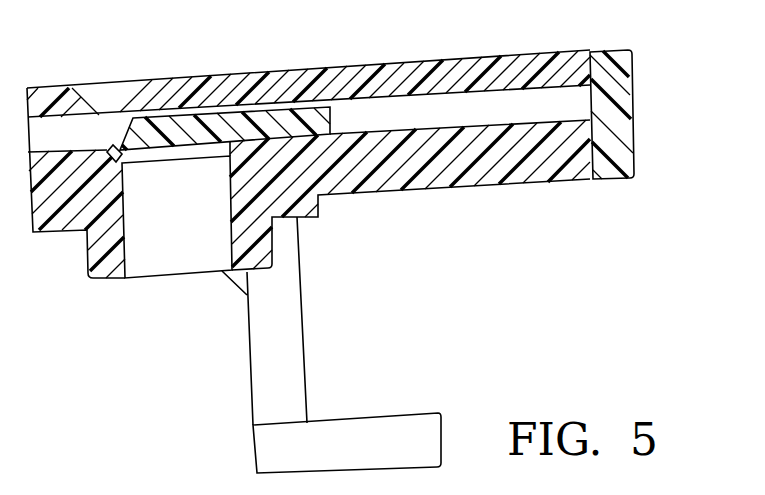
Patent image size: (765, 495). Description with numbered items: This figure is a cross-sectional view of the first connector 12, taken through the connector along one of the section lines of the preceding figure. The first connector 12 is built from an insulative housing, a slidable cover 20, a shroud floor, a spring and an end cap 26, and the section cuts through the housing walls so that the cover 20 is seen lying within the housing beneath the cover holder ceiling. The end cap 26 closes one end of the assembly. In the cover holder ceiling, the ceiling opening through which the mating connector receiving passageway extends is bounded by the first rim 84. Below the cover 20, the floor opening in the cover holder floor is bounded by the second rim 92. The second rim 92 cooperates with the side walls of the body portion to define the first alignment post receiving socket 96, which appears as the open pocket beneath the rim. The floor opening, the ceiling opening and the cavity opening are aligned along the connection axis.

The first connector 12 is at (660, 127).
The end cap 26 is at (613, 50).
The slidable cover 20 is at (193, 117).
The first rim 84 is at (80, 88).
The second rim 92 is at (115, 148).
The first alignment post receiving socket 96 is at (183, 240).